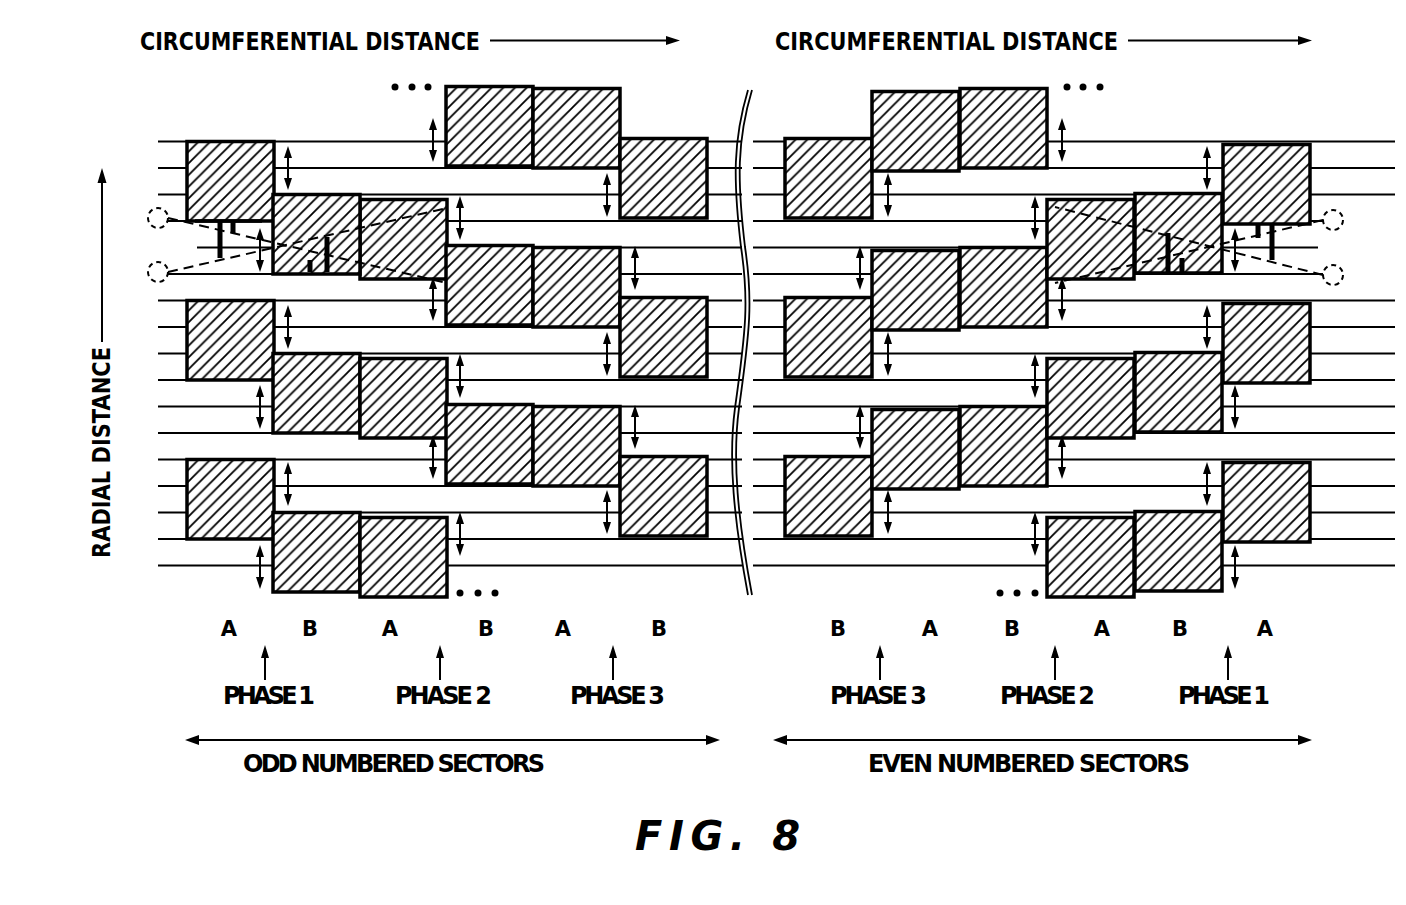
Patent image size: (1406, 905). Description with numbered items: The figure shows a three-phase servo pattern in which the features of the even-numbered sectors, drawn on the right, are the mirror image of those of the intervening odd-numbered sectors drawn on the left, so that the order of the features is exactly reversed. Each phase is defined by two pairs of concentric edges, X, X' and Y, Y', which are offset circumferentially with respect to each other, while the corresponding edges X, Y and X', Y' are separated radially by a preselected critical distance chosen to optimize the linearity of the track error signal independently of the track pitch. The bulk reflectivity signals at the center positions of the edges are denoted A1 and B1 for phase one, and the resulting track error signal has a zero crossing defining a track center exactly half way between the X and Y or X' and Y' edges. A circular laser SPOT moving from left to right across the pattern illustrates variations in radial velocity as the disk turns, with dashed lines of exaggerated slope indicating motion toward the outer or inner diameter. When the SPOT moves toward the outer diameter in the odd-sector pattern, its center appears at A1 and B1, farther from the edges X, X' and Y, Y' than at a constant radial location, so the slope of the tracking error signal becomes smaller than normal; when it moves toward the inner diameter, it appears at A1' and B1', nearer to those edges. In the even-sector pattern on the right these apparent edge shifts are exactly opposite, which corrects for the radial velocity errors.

The concentric edge X is at (230, 160).
The concentric edge Y is at (316, 209).
The concentric edge X' is at (219, 240).
The concentric edge Y' is at (273, 262).
The bulk reflectivity signal A1 is at (730, 259).
The apparent spot center position A1' is at (767, 259).
The bulk reflectivity signal B1 is at (765, 271).
The apparent spot center position B1' is at (733, 269).
The laser spot SPOT is at (1398, 247).